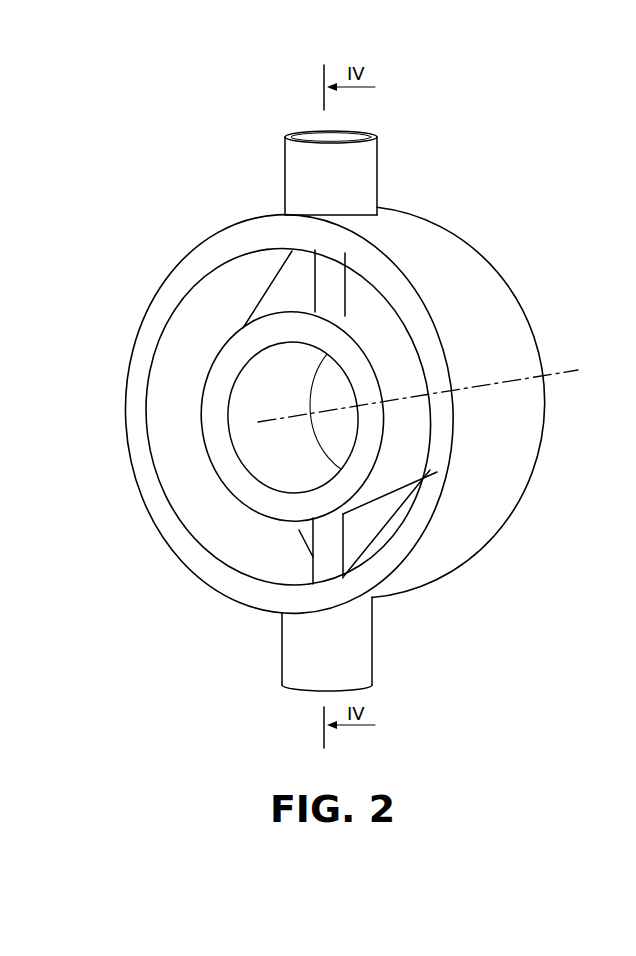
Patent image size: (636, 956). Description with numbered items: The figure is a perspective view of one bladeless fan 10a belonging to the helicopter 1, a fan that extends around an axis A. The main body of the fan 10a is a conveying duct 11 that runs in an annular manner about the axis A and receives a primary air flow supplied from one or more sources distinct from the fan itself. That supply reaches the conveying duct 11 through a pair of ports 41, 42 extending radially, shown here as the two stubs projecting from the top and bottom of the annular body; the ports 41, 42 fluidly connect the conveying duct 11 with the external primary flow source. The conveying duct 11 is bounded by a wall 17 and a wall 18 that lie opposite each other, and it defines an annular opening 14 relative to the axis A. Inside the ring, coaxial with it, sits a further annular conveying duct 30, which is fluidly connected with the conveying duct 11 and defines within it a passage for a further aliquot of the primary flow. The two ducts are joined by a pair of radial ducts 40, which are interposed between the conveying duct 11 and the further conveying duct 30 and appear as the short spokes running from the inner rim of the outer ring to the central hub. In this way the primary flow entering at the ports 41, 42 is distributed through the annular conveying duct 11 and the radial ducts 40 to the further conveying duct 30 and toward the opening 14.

The helicopter 1 is at (352, 381).
The fan 10a is at (324, 376).
The conveying duct 11 is at (192, 276).
The annular opening 14 is at (186, 318).
The wall 17 is at (441, 260).
The wall 18 is at (415, 315).
The further annular conveying duct 30 is at (372, 442).
The radial ducts 40 is at (323, 270).
The port 41 is at (300, 128).
The port 42 is at (288, 694).
The axis A is at (568, 372).